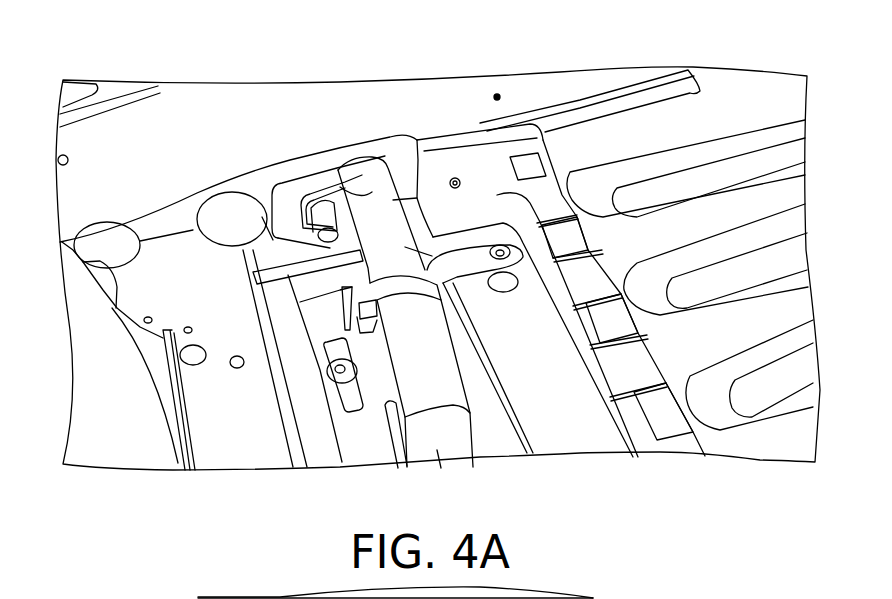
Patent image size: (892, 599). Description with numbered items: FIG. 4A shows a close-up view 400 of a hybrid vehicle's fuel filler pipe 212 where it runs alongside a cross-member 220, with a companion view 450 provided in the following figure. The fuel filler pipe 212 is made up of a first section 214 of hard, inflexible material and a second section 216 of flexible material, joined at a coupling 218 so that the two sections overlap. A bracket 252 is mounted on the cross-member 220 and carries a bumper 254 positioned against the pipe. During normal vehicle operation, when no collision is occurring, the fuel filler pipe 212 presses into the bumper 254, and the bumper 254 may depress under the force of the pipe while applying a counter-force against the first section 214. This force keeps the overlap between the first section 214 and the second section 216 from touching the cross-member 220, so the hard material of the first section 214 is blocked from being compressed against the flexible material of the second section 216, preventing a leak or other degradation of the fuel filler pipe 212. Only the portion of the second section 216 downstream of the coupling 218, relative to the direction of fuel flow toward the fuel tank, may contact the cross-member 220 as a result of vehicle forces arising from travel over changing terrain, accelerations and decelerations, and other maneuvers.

The view 400 is at (740, 27).
The fuel filler pipe 212 is at (388, 360).
The first section 214 is at (335, 190).
The second section 216 is at (408, 462).
The coupling 218 is at (335, 330).
The cross-member 220 is at (573, 406).
The bracket 252 is at (508, 292).
The bumper 254 is at (413, 163).
The view 450 is at (658, 563).